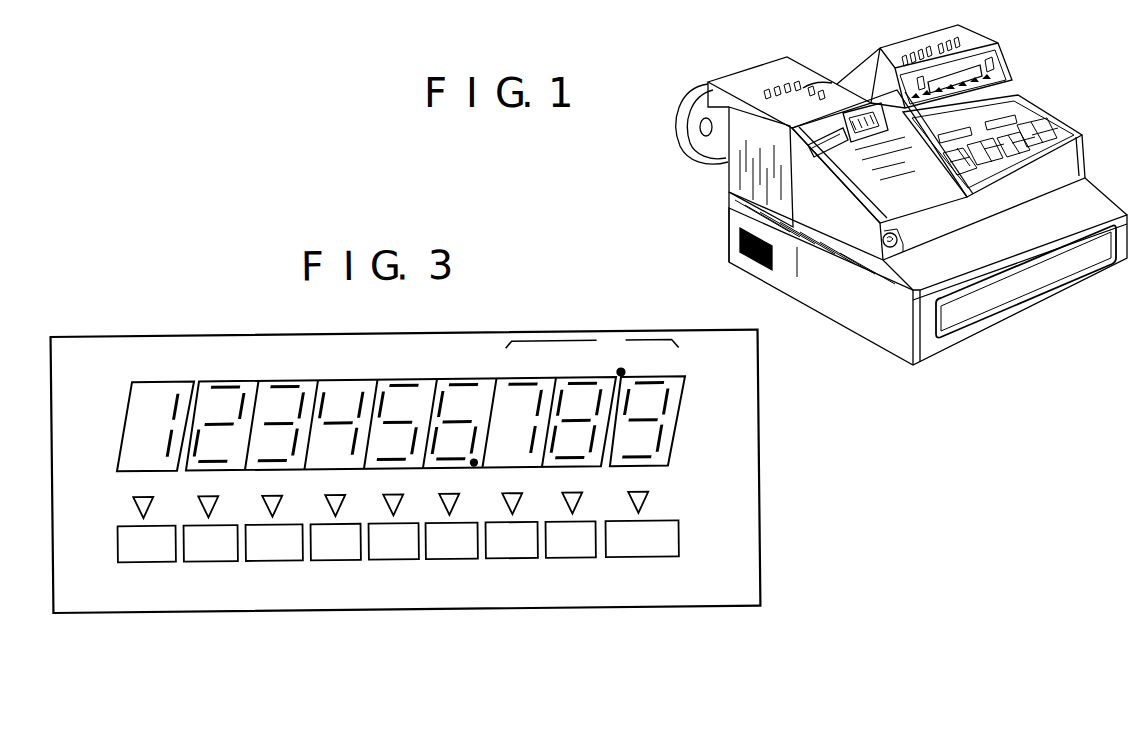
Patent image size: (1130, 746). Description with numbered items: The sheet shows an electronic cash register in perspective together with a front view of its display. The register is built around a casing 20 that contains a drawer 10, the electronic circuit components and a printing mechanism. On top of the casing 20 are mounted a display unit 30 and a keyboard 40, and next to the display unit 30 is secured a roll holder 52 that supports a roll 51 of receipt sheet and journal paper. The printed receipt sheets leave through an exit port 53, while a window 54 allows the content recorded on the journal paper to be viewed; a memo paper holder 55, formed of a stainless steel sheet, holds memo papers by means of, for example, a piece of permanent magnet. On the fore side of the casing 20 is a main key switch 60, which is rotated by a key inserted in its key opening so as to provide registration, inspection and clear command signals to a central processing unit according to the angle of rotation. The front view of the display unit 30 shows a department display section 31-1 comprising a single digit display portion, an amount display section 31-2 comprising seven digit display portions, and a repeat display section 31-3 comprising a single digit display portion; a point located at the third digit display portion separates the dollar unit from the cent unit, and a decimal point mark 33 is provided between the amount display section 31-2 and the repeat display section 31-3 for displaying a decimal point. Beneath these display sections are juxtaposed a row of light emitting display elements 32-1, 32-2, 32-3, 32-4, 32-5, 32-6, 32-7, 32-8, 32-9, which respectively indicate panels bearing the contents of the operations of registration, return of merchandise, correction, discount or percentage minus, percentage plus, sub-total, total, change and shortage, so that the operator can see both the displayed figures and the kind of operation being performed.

In FIG. 1, the drawer 10 is at (1097, 250).
In FIG. 1, the casing 20 is at (728, 176).
In FIG. 1, the display unit 30 is at (988, 72).
In FIG. 3, the display unit 30 is at (632, 612).
In FIG. 3, the department display section 31-1 is at (148, 384).
In FIG. 3, the amount display section 31-2 is at (283, 384).
In FIG. 3, the repeat display section 31-3 is at (679, 421).
In FIG. 3, the light emitting display element 32-1 is at (141, 487).
In FIG. 3, the light emitting display element 32-2 is at (206, 487).
In FIG. 3, the light emitting display element 32-3 is at (270, 487).
In FIG. 3, the light emitting display element 32-4 is at (333, 487).
In FIG. 3, the light emitting display element 32-5 is at (391, 487).
In FIG. 3, the light emitting display element 32-6 is at (447, 487).
In FIG. 3, the light emitting display element 32-7 is at (510, 487).
In FIG. 3, the light emitting display element 32-8 is at (570, 487).
In FIG. 3, the light emitting display element 32-9 is at (636, 487).
In FIG. 3, the decimal point mark 33 is at (620, 377).
In FIG. 1, the keyboard 40 is at (1053, 128).
In FIG. 1, the roll 51 is at (689, 132).
In FIG. 1, the roll holder 52 is at (746, 71).
In FIG. 1, the exit port 53 is at (827, 150).
In FIG. 1, the window 54 is at (868, 140).
In FIG. 1, the memo paper holder 55 is at (860, 188).
In FIG. 1, the main key switch 60 is at (897, 245).